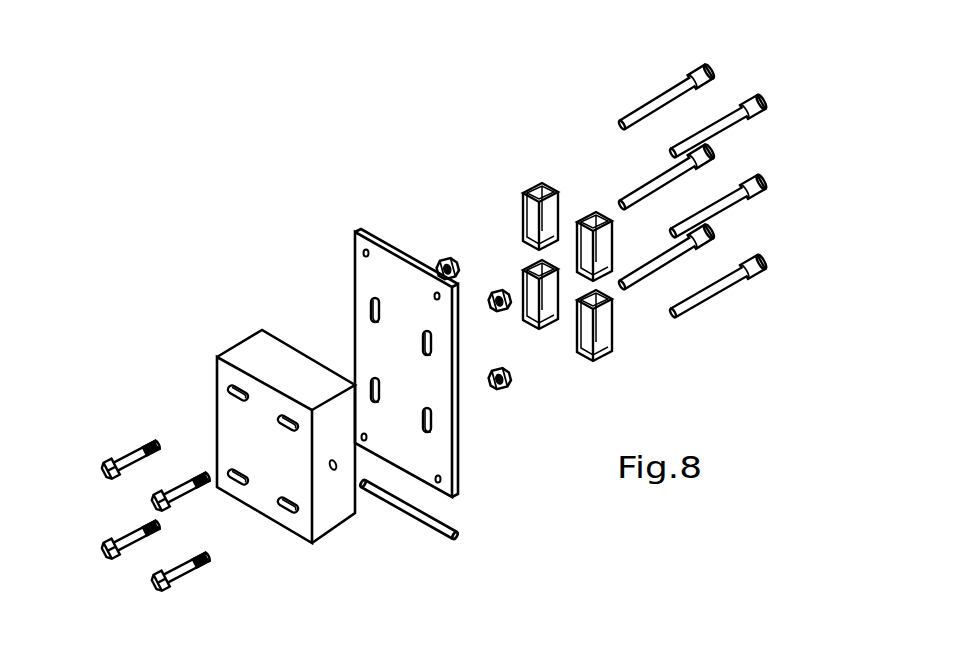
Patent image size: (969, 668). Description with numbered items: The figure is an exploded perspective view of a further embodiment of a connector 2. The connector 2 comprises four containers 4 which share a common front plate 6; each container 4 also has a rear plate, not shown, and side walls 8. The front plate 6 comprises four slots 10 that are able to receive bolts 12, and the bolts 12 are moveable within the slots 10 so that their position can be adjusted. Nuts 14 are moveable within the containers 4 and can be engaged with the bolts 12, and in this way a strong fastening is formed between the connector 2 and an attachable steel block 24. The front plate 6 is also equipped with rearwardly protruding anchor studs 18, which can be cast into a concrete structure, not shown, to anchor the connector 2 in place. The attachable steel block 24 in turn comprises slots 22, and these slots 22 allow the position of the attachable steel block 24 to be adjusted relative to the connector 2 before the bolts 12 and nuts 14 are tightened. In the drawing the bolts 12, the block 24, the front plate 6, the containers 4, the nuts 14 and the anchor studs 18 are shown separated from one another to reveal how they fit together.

The connector 2 is at (385, 133).
The container 4 is at (541, 173).
The front plate 6 is at (362, 278).
The side wall 8 is at (534, 195).
The slot 10 is at (370, 310).
The bolt 12 is at (103, 462).
The nut 14 is at (447, 256).
The anchor stud 18 is at (700, 64).
The slot 22 is at (228, 388).
The attachable steel block 24 is at (252, 352).